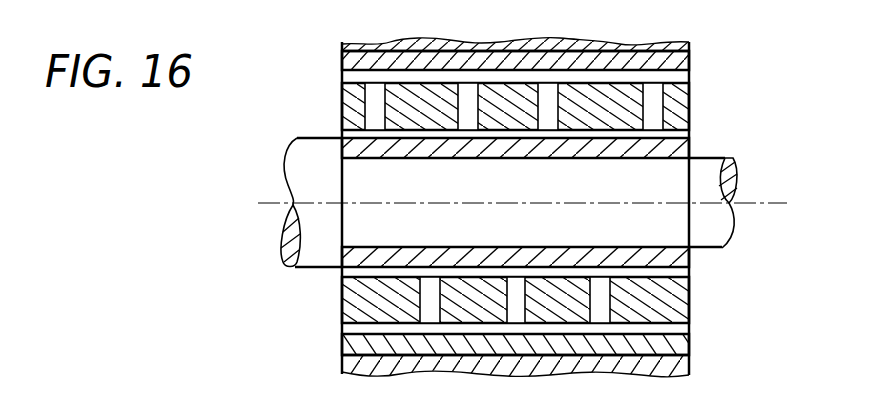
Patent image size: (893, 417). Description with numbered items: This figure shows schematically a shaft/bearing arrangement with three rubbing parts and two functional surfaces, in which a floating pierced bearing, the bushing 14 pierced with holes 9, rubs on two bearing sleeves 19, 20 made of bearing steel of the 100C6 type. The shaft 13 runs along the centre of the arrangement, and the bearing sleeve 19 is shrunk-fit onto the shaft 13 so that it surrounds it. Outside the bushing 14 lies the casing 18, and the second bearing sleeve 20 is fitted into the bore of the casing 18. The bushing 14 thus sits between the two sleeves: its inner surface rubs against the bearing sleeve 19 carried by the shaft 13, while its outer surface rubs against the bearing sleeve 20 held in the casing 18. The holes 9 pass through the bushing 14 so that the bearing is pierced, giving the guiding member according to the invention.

The holes 9 is at (470, 97).
The shaft 13 is at (688, 185).
The bushing 14 is at (678, 100).
The casing 18 is at (690, 42).
The bearing sleeve 19 is at (670, 157).
The bearing sleeve 20 is at (673, 63).